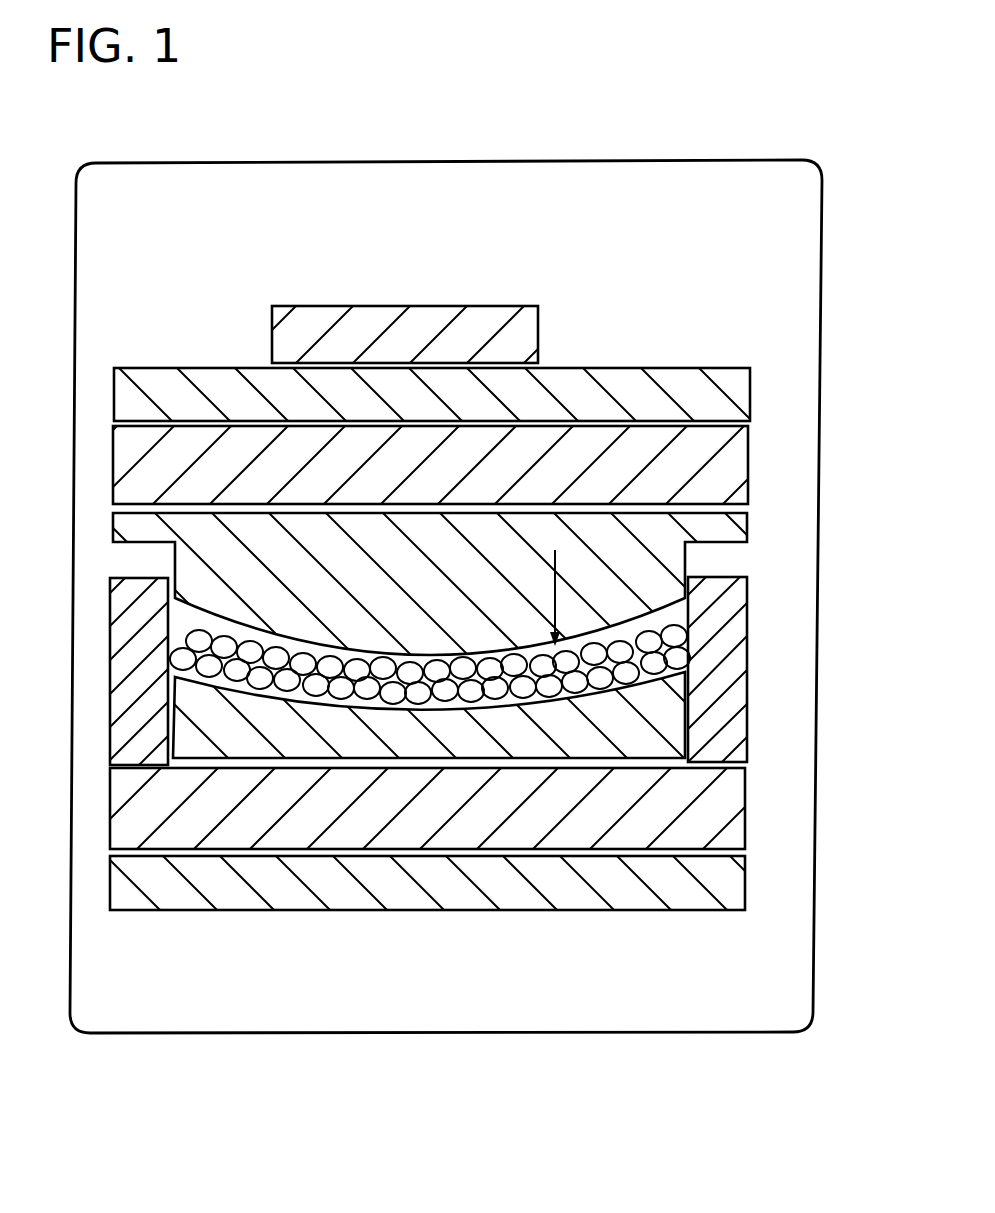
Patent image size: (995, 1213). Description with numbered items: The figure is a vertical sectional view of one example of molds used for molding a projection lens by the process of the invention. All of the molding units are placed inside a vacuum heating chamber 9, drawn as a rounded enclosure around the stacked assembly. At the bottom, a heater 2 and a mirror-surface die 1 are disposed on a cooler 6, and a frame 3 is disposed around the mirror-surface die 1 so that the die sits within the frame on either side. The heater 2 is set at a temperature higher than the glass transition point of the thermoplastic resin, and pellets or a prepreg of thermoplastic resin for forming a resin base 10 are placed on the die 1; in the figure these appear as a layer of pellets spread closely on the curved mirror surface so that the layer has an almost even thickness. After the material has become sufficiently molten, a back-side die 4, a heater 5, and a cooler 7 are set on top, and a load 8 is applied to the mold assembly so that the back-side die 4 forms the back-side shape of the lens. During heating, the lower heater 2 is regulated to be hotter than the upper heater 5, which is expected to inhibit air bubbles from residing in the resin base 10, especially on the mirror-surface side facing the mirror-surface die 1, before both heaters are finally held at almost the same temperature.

The mirror-surface die 1 is at (653, 715).
The heater 2 is at (733, 795).
The frame 3 is at (735, 602).
The back-side die 4 is at (652, 563).
The heater 5 is at (737, 455).
The cooler 6 is at (733, 878).
The cooler 7 is at (738, 395).
The load 8 is at (527, 330).
The vacuum heating chamber 9 is at (809, 188).
The resin base 10 is at (652, 667).